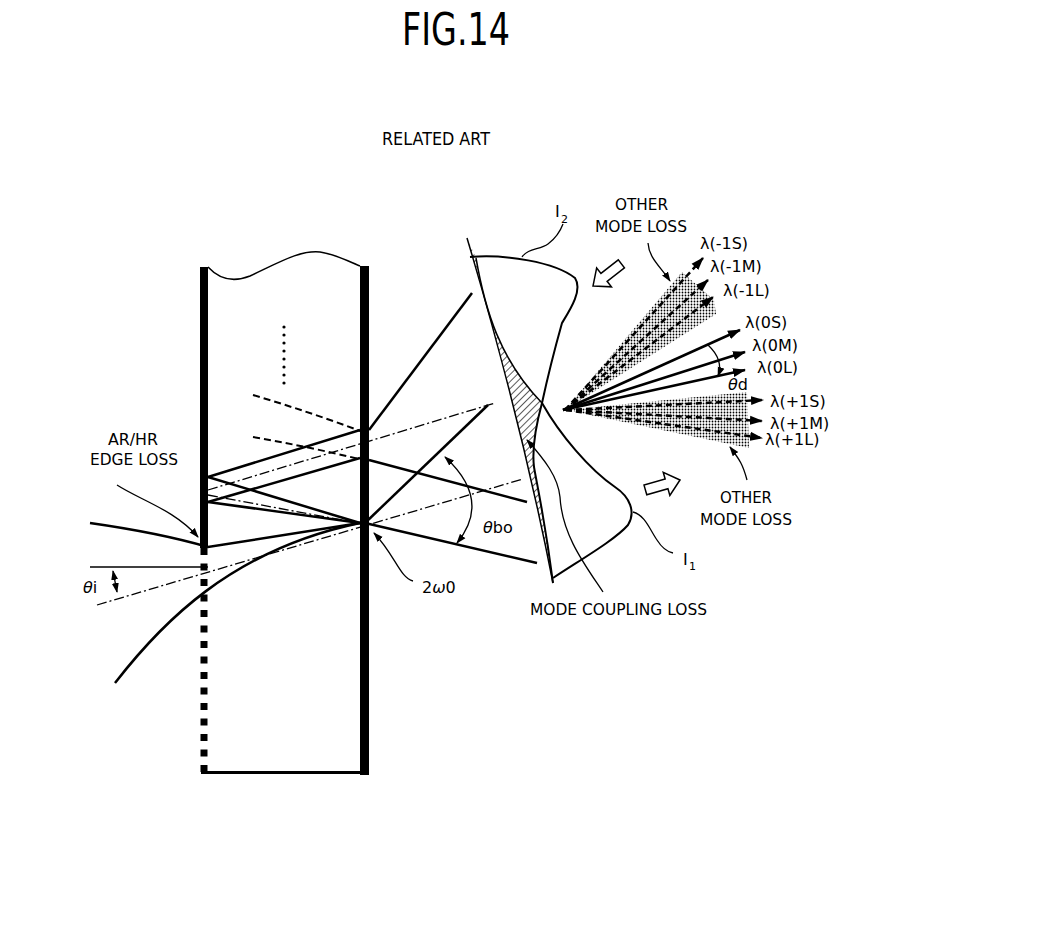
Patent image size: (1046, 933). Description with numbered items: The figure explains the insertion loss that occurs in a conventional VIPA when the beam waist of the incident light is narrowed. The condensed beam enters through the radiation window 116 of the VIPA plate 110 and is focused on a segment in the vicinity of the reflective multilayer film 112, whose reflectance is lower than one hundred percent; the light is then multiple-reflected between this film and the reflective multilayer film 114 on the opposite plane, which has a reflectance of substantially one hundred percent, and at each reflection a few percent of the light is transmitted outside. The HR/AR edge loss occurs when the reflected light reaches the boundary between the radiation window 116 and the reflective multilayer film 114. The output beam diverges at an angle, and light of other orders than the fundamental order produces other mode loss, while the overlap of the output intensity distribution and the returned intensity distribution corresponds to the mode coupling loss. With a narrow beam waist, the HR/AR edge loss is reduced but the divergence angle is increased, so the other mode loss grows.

The VIPA plate 110 is at (277, 245).
The reflective multilayer film 112 is at (370, 295).
The reflective multilayer film 114 is at (200, 295).
The radiation window 116 is at (203, 749).